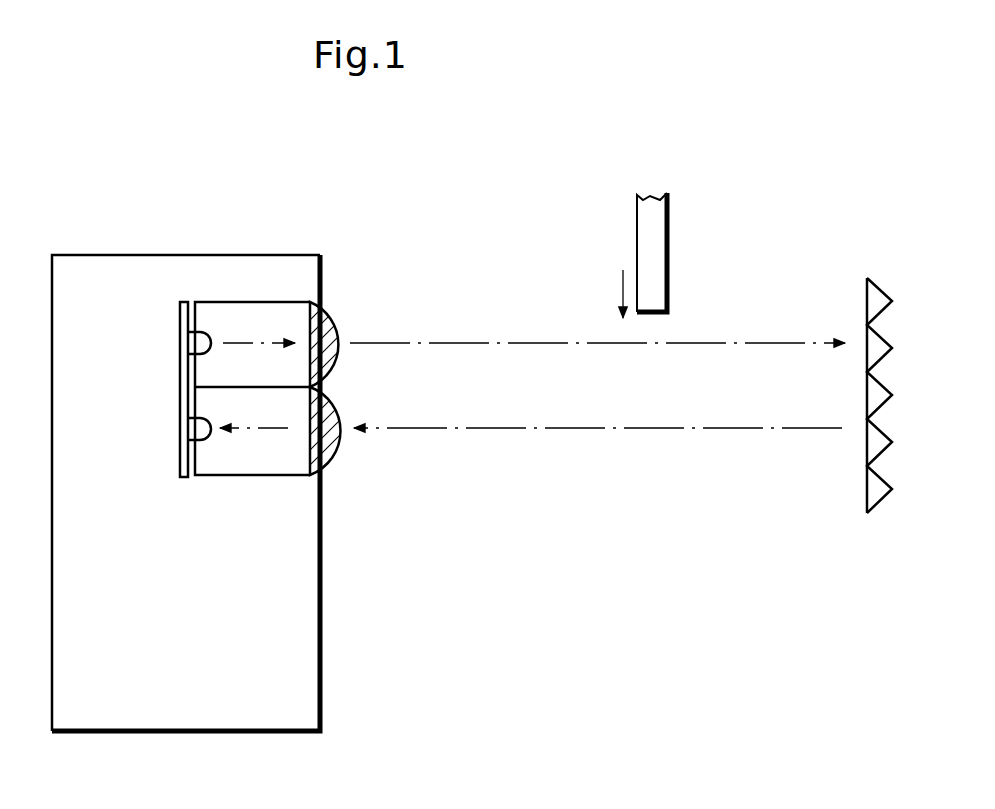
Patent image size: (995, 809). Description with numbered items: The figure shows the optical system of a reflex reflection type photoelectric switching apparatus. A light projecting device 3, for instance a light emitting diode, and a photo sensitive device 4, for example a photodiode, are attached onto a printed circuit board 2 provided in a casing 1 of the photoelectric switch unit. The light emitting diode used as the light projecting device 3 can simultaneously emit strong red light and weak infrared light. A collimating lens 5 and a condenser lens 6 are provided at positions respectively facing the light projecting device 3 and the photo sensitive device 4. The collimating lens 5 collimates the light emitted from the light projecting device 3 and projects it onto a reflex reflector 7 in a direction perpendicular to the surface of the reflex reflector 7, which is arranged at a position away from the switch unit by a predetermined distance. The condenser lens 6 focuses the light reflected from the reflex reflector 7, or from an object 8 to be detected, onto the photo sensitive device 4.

The casing 1 is at (201, 255).
The printed circuit board 2 is at (182, 442).
The light projecting device 3 is at (206, 334).
The photo sensitive device 4 is at (208, 441).
The collimating lens 5 is at (333, 318).
The condenser lens 6 is at (337, 460).
The reflex reflector 7 is at (867, 300).
The object to be detected 8 is at (667, 240).